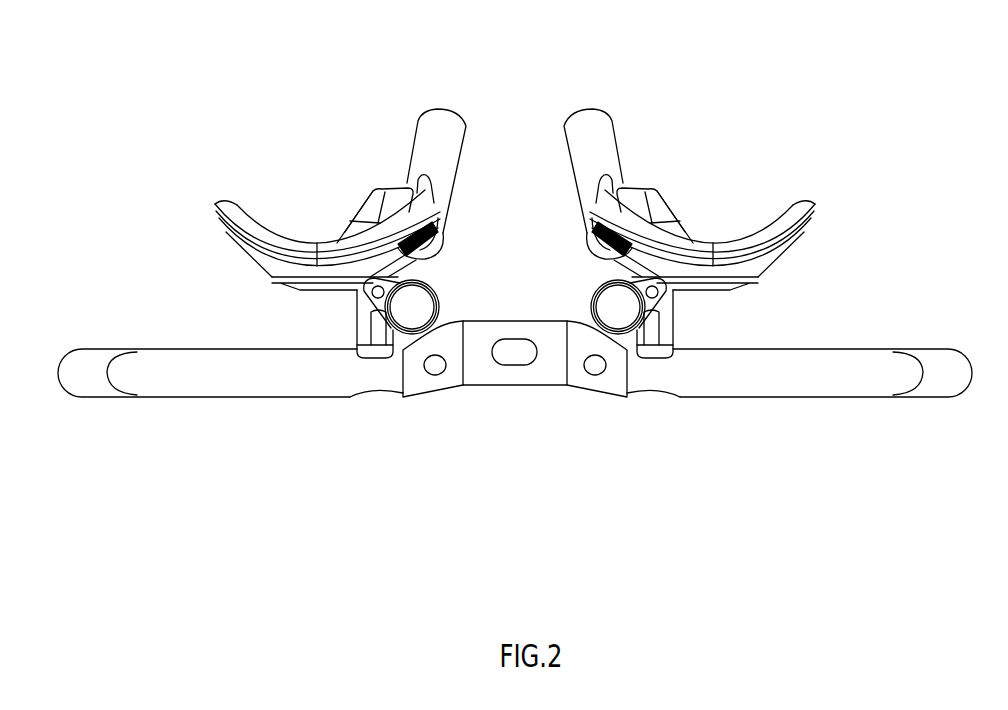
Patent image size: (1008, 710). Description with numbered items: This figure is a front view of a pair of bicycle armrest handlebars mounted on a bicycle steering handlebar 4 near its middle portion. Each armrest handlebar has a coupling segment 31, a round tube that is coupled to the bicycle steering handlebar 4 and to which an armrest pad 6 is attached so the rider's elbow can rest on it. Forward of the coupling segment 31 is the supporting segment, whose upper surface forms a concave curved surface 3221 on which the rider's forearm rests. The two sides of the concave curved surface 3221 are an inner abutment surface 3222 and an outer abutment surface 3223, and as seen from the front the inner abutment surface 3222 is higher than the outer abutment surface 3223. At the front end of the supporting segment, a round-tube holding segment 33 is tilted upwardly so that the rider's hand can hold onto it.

The bicycle steering handlebar 4 is at (187, 377).
The coupling segment 31 is at (438, 285).
The holding segment 33 is at (443, 128).
The concave curved surface 3221 is at (383, 187).
The inner abutment surface 3222 is at (433, 192).
The outer abutment surface 3223 is at (362, 195).
The armrest pad 6 is at (233, 215).